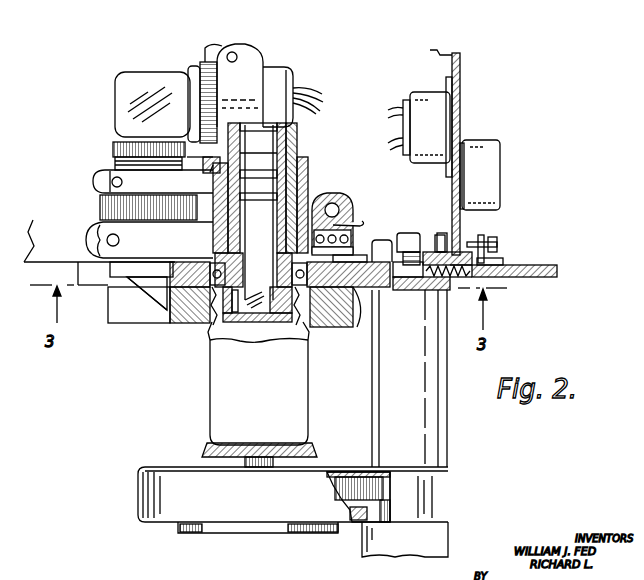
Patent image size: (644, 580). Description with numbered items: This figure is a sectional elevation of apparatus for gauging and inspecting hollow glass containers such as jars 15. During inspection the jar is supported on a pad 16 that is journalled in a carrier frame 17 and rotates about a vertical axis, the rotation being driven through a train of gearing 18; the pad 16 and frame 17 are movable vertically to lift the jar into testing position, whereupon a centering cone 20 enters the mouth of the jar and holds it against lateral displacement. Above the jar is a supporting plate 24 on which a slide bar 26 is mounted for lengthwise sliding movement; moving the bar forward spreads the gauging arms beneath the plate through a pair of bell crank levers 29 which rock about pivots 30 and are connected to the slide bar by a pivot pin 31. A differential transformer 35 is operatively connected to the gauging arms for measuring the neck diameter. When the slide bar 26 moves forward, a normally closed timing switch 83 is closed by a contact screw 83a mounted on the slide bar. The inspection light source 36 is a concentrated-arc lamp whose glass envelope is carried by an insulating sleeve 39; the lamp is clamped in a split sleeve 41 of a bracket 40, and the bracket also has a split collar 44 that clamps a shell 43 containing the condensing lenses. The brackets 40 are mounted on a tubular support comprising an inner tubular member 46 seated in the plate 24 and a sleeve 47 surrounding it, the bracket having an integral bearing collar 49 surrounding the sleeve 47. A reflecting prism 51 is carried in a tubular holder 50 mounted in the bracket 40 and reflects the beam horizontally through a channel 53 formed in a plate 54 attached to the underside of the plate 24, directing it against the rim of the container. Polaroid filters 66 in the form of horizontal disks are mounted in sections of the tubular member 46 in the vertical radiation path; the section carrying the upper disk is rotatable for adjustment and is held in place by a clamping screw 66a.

The jar 15 is at (212, 374).
The pad 16 is at (202, 451).
The carrier frame 17 is at (282, 507).
The train of gearing 18 is at (352, 475).
The centering cone 20 is at (285, 314).
The supporting plate 24 is at (356, 312).
The slide bar 26 is at (546, 243).
The bell crank levers 29 is at (358, 257).
The pivots 30 is at (406, 250).
The pivot pin 31 is at (441, 236).
The differential transformer 35 is at (350, 211).
The light source 36 is at (154, 68).
The insulating sleeve 39 is at (266, 70).
The bracket 40 is at (210, 154).
The split sleeve 41 is at (237, 52).
The shell 43 is at (113, 150).
The split collar 44 is at (93, 181).
The inner tubular member 46 is at (279, 229).
The sleeve 47 is at (298, 131).
The bearing collar 49 is at (304, 184).
The tubular holder 50 is at (152, 267).
The reflecting prism 51 is at (150, 297).
The channel 53 is at (235, 309).
The plate 54 is at (193, 310).
The polaroid filters 66 is at (262, 172).
The clamping screw 66a is at (210, 172).
The timing switch 83 is at (460, 242).
The contact screw 83a is at (487, 243).